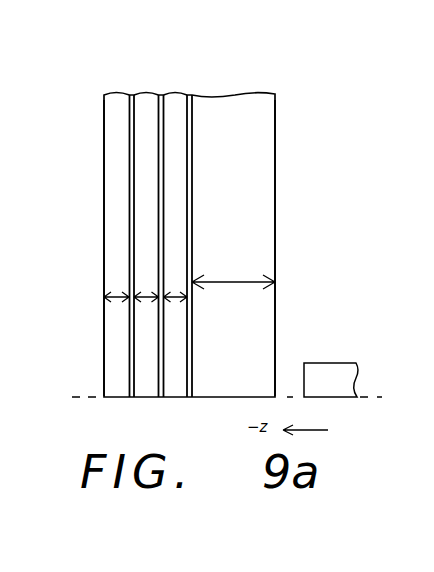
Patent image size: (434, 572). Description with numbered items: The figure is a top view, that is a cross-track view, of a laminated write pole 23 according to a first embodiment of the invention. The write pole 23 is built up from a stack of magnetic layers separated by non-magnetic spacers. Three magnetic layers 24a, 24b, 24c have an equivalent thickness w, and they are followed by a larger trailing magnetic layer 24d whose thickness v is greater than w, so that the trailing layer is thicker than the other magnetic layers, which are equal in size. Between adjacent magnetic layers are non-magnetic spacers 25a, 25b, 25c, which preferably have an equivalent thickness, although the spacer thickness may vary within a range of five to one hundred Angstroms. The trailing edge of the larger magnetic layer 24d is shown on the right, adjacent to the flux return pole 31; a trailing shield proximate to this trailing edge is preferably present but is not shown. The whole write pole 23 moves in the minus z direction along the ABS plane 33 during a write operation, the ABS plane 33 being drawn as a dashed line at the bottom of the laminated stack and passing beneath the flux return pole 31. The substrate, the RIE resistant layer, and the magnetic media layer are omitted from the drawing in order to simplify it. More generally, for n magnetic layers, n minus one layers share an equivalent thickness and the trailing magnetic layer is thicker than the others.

The write pole 23 is at (89, 80).
The magnetic layer 24a is at (112, 234).
The magnetic layer 24b is at (147, 383).
The magnetic layer 24c is at (176, 383).
The trailing magnetic layer 24d is at (266, 151).
The non-magnetic spacer 25a is at (131, 94).
The non-magnetic spacer 25b is at (160, 94).
The non-magnetic spacer 25c is at (190, 94).
The flux return pole 31 is at (333, 375).
The ABS plane 33 is at (222, 399).